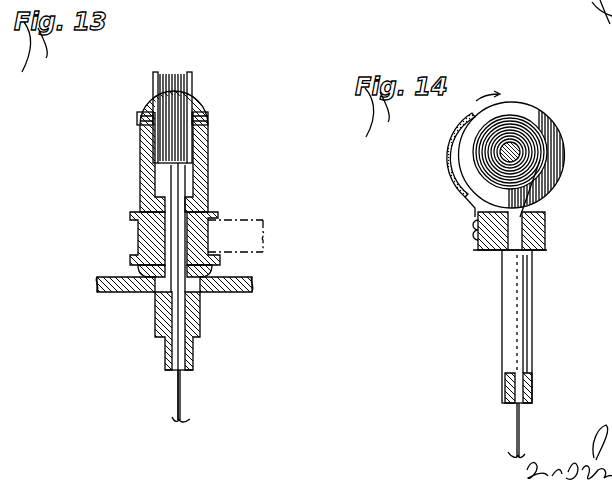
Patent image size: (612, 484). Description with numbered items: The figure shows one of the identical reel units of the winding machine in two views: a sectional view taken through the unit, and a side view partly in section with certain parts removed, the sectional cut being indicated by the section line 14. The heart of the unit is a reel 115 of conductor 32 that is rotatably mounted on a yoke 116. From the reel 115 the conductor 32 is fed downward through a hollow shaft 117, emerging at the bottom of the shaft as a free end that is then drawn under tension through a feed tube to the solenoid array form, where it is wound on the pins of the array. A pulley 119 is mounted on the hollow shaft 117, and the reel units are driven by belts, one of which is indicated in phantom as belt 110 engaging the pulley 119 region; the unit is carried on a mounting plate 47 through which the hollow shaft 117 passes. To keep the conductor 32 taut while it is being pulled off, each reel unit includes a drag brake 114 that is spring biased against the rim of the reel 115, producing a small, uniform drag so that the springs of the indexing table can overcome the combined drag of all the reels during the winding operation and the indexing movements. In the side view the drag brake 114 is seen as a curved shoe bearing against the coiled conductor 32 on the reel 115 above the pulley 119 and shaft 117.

In FIG. 13, the section line 14- 14 is at (172, 35).
In FIG. 13, the reel 115 is at (192, 82).
In FIG. 14, the reel 115 is at (559, 134).
In FIG. 13, the yoke 116 is at (194, 164).
In FIG. 13, the pulley 119 is at (217, 213).
In FIG. 13, the bracket (phantom) 110 is at (250, 217).
In FIG. 13, the mounting plate 47 is at (250, 289).
In FIG. 13, the hollow shaft 117 is at (194, 354).
In FIG. 14, the hollow shaft 117 is at (510, 295).
In FIG. 13, the conductor 32 is at (185, 408).
In FIG. 14, the conductor 32 is at (518, 413).
In FIG. 14, the drag brake 114 is at (452, 152).